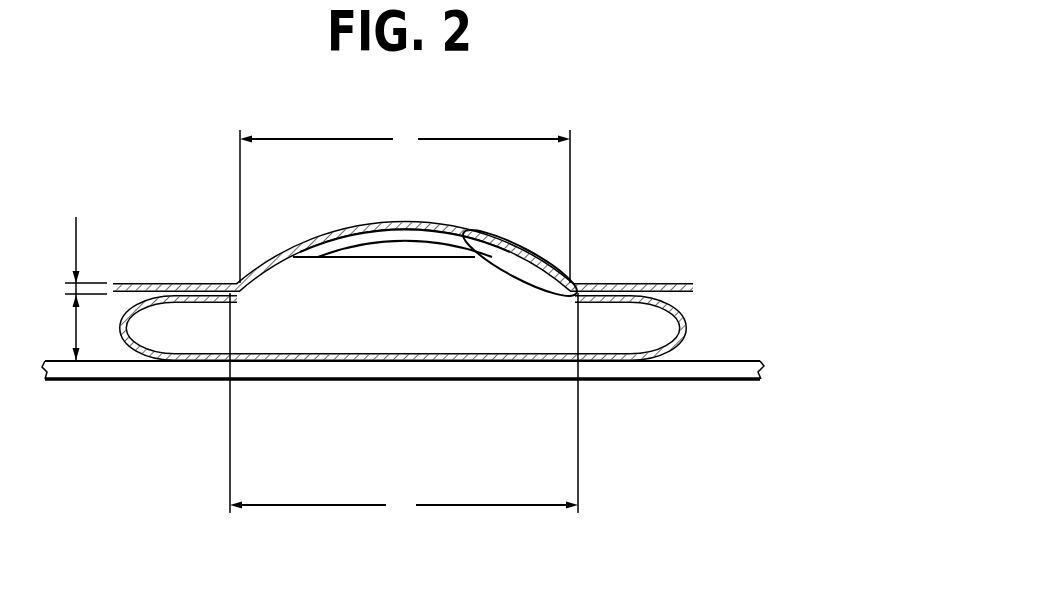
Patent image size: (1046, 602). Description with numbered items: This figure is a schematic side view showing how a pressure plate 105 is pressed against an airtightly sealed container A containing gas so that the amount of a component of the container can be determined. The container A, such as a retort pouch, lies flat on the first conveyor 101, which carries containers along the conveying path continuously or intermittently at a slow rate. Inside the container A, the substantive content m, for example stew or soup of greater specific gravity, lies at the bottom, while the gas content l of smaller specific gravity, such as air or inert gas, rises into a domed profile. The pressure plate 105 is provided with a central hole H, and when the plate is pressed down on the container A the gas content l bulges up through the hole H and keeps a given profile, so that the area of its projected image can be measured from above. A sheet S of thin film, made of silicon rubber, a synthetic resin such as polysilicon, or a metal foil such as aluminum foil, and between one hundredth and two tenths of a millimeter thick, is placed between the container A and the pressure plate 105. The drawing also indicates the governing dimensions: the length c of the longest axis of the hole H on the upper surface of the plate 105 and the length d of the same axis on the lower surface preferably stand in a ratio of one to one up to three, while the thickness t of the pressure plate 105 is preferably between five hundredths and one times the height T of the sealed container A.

The first conveyor 101 is at (764, 367).
The pressure plate 105 is at (690, 282).
The airtightly sealed container containing gas A is at (696, 324).
The sheet S is at (403, 222).
The gas content l is at (375, 247).
The substantive content m is at (432, 330).
The central hole H is at (463, 233).
The length of the longest axis of the central hole on the upper surface of the press c is at (405, 202).
The length of the longest axis of the central hole on the lower surface of the press d is at (404, 411).
The thickness of the pressure plate t is at (77, 259).
The height of the airtightly sealed container containing gas T is at (60, 327).